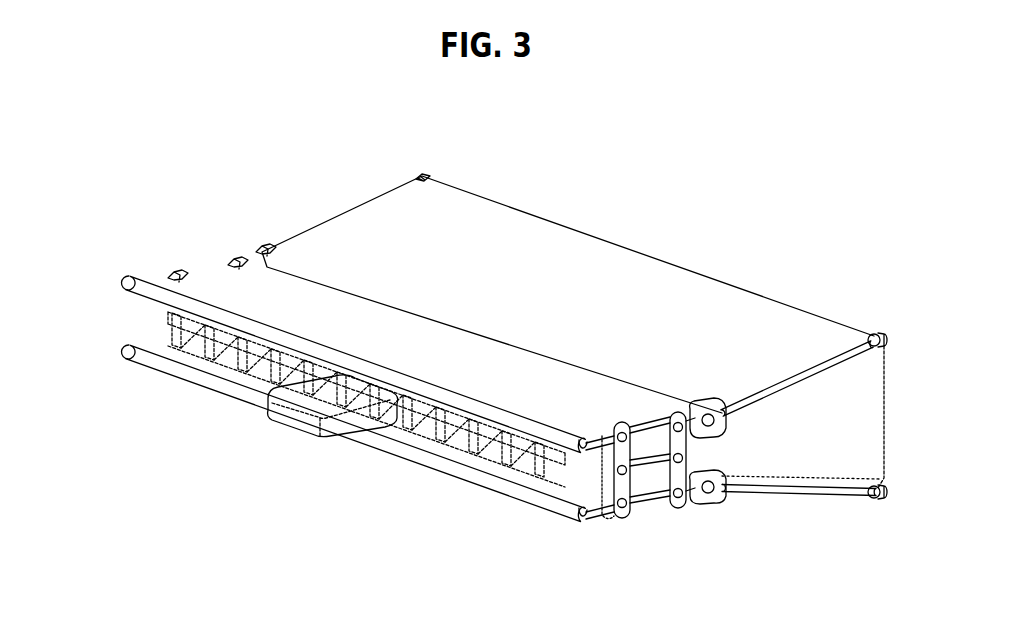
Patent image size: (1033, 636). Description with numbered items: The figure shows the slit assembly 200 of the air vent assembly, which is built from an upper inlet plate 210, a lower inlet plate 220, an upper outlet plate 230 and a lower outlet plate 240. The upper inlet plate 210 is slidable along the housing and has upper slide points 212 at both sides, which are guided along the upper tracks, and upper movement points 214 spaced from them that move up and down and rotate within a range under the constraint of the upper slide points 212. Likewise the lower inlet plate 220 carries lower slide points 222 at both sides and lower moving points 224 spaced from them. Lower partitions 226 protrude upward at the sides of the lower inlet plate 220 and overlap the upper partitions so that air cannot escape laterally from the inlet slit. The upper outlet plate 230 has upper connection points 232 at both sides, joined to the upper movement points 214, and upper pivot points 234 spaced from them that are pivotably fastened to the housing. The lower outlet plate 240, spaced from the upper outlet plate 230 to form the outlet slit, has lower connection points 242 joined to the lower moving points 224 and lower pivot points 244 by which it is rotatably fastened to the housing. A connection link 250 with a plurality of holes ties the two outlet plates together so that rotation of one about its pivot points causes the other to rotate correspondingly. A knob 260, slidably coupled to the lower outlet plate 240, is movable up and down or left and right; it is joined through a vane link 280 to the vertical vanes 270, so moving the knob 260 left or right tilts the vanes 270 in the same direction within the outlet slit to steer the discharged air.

The slit assembly 200 is at (738, 142).
The upper inlet plate 210 is at (548, 250).
The upper slide points 212 is at (421, 176).
The upper movement points 214 is at (758, 385).
The lower inlet plate 220 is at (806, 496).
The lower slide points 222 is at (883, 500).
The lower moving points 224 is at (714, 490).
The lower partitions 226 is at (868, 428).
The upper outlet plate 230 is at (145, 288).
The upper connection points 232 is at (705, 405).
The upper pivot points 234 is at (122, 280).
The lower outlet plate 240 is at (188, 378).
The lower connection points 242 is at (705, 502).
The lower pivot points 244 is at (125, 350).
The connection link 250 is at (633, 502).
The knob 260 is at (292, 418).
The vanes 270 is at (438, 457).
The vane link 280 is at (405, 447).